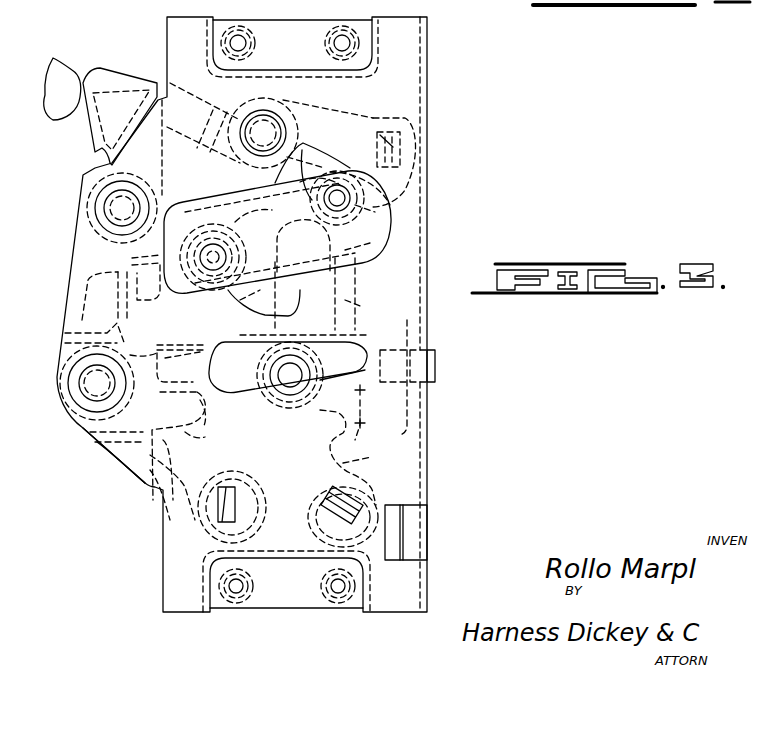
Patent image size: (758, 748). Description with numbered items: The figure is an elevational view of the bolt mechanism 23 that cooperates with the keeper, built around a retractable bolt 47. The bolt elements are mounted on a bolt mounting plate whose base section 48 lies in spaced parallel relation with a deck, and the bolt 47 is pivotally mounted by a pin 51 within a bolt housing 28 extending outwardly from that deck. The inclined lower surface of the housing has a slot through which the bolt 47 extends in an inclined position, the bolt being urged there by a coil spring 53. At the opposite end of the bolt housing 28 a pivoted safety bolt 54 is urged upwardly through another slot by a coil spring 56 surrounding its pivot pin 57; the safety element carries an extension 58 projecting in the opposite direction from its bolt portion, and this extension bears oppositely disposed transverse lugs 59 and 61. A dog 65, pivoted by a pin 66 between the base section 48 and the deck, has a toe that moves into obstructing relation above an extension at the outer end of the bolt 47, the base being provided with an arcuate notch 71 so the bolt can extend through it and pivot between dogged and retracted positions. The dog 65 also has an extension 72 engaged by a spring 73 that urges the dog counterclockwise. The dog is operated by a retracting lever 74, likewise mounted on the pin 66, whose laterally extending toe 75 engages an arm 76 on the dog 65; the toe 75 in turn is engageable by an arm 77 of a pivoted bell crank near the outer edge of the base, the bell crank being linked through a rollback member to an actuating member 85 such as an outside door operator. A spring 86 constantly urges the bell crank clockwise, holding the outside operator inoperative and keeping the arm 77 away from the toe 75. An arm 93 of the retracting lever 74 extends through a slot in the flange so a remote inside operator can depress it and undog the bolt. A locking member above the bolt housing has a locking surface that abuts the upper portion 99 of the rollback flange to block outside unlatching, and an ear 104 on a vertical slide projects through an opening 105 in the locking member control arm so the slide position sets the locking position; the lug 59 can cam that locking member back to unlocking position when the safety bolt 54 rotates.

The bolt mechanism 23 is at (242, 314).
The bolt housing 28 is at (162, 243).
The retractable bolt 47 is at (256, 300).
The base section 48 is at (405, 265).
The pin 51 is at (218, 282).
The coil spring 53 is at (253, 220).
The safety bolt 54 is at (311, 197).
The coil spring 56 is at (303, 246).
The pivot pin 57 is at (360, 220).
The extension 58 is at (438, 235).
The lug 59 is at (436, 207).
The lug 61 is at (357, 244).
The dog 65 is at (356, 306).
The pin 66 is at (292, 387).
The arcuate notch 71 is at (303, 293).
The extension 72 is at (331, 398).
The spring 73 is at (369, 453).
The retracting lever 74 is at (172, 352).
The toe 75 is at (207, 405).
The arm 76 is at (157, 358).
The arm 77 is at (192, 433).
The member 85 is at (68, 72).
The spring 86 is at (165, 507).
The arm 93 is at (436, 365).
The upper portion 99 is at (137, 75).
The ear 104 is at (442, 115).
The opening 105 is at (377, 118).